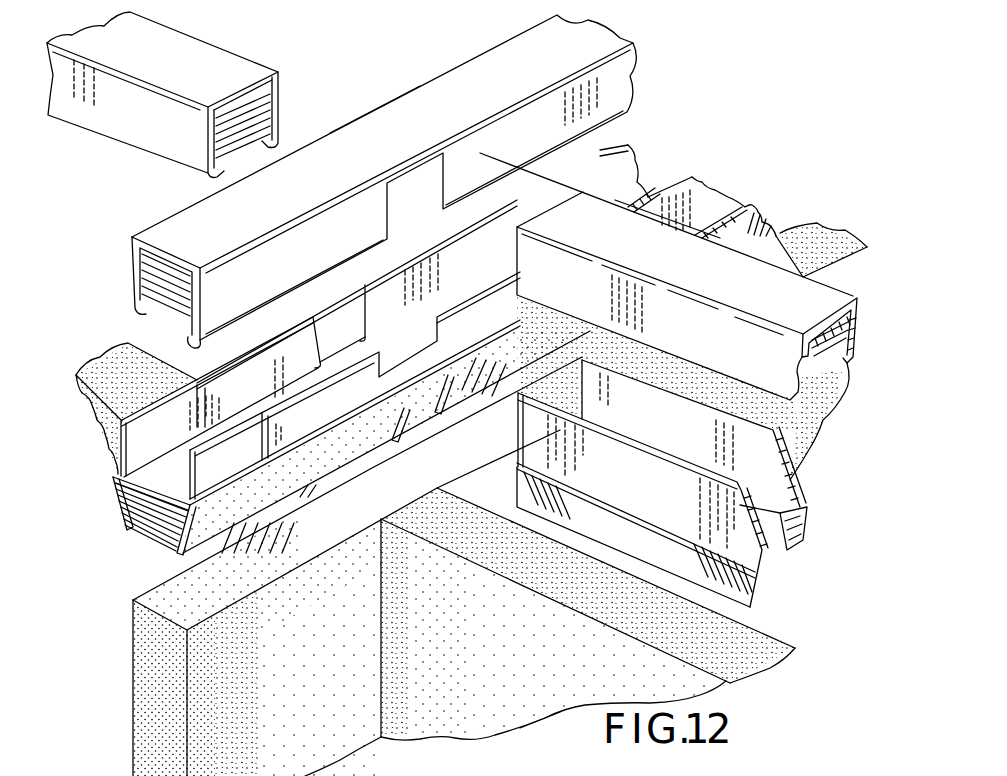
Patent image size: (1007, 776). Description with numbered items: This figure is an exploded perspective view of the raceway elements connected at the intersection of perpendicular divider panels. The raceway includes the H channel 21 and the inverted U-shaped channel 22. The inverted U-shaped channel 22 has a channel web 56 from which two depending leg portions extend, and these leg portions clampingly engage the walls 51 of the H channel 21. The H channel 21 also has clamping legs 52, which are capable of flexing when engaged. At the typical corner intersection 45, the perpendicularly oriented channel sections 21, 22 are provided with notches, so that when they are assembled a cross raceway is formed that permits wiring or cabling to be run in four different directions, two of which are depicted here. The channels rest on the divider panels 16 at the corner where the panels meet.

The concrete wall panel 16 is at (340, 649).
The H channel 21 is at (695, 175).
The inverted U-shaped channel 22 is at (152, 160).
The corner intersection 45 is at (375, 96).
The walls 51 is at (133, 435).
The clamping legs 52 is at (115, 497).
The channel web 56 is at (541, 744).